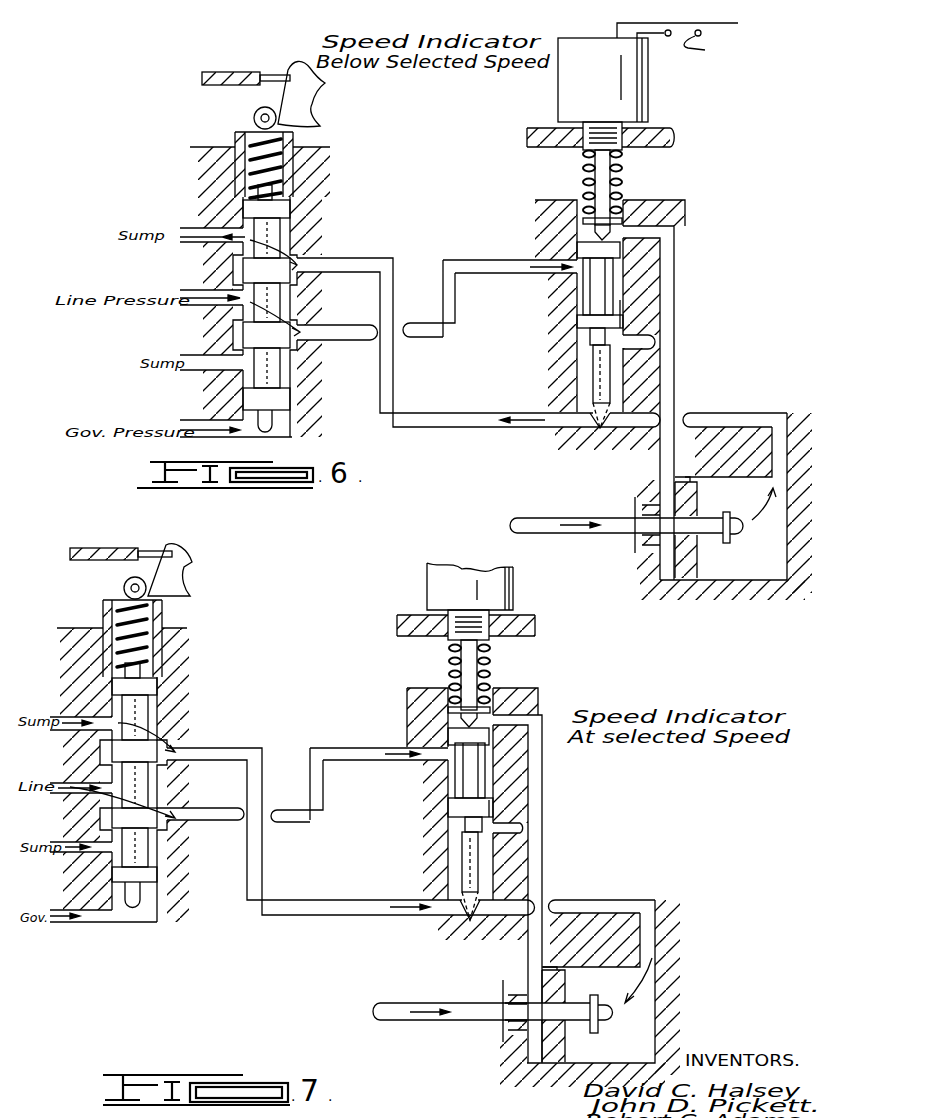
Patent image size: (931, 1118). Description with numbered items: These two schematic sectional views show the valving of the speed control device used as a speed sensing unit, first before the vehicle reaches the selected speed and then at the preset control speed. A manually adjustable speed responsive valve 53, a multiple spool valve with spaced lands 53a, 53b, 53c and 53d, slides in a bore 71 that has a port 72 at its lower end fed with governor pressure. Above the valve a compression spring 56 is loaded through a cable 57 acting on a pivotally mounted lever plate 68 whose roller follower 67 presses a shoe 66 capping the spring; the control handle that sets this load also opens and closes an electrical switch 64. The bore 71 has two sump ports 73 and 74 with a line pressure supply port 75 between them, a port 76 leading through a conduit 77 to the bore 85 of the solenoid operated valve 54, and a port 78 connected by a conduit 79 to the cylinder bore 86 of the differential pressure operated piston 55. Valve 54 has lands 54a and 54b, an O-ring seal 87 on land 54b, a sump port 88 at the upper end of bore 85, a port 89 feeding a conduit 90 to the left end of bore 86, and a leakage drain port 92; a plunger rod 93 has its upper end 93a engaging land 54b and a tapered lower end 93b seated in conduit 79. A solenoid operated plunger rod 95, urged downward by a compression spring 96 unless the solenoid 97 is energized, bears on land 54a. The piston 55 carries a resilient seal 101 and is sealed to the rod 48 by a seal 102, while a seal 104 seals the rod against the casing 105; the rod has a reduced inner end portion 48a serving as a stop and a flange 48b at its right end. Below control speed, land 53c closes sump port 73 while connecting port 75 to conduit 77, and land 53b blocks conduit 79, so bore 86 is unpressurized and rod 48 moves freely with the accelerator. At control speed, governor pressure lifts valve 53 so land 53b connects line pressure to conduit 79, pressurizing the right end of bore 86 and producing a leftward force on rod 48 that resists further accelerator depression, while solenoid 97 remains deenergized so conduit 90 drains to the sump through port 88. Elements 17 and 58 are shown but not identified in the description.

In FIG. 6, the mounting plate 17 is at (527, 136).
In FIG. 7, the mounting plate 17 is at (400, 622).
In FIG. 6, the piston connecting rod 48 is at (649, 517).
In FIG. 7, the piston connecting rod 48 is at (557, 998).
In FIG. 6, the reduced diameter inner end portion 48a is at (740, 530).
In FIG. 7, the reduced diameter inner end portion 48a is at (620, 1018).
In FIG. 6, the washer-like flange 48b is at (750, 497).
In FIG. 7, the washer-like flange 48b is at (660, 958).
In FIG. 6, the speed responsive valve 53 is at (261, 302).
In FIG. 7, the speed responsive valve 53 is at (150, 780).
In FIG. 6, the valve land 53a is at (255, 205).
In FIG. 7, the valve land 53a is at (160, 686).
In FIG. 6, the valve land 53b is at (243, 268).
In FIG. 7, the valve land 53b is at (165, 742).
In FIG. 6, the valve land 53c is at (243, 335).
In FIG. 7, the valve land 53c is at (117, 819).
In FIG. 6, the valve land 53d is at (245, 397).
In FIG. 7, the valve land 53d is at (150, 878).
In FIG. 6, the solenoid operated valve 54 is at (566, 283).
In FIG. 7, the solenoid operated valve 54 is at (425, 766).
In FIG. 6, the upper end land 54a is at (585, 258).
In FIG. 7, the upper end land 54a is at (458, 740).
In FIG. 6, the lower end land 54b is at (580, 318).
In FIG. 7, the lower end land 54b is at (454, 778).
In FIG. 6, the differential pressure operated piston 55 is at (708, 561).
In FIG. 7, the differential pressure operated piston 55 is at (576, 1043).
In FIG. 6, the compression spring 56 is at (296, 160).
In FIG. 7, the compression spring 56 is at (165, 623).
In FIG. 6, the cable 57 is at (290, 73).
In FIG. 7, the cable 57 is at (145, 578).
In FIG. 6, the link 58 is at (225, 72).
In FIG. 7, the link 58 is at (90, 548).
In FIG. 6, the electrical switch 64 is at (705, 50).
In FIG. 6, the shoe 66 is at (298, 130).
In FIG. 7, the shoe 66 is at (170, 606).
In FIG. 7, the roller follower 67 is at (124, 587).
In FIG. 6, the lever plate 68 is at (308, 98).
In FIG. 7, the lever plate 68 is at (195, 561).
In FIG. 6, the valve bore 71 is at (300, 275).
In FIG. 7, the valve bore 71 is at (160, 862).
In FIG. 6, the governor pressure port 72 is at (235, 440).
In FIG. 7, the governor pressure port 72 is at (108, 925).
In FIG. 6, the sump port 73 is at (225, 360).
In FIG. 7, the sump port 73 is at (85, 868).
In FIG. 6, the sump port 74 is at (198, 234).
In FIG. 7, the sump port 74 is at (70, 715).
In FIG. 6, the line pressure supply port 75 is at (243, 297).
In FIG. 7, the line pressure supply port 75 is at (72, 783).
In FIG. 6, the port 76 is at (305, 326).
In FIG. 7, the port 76 is at (338, 750).
In FIG. 6, the conduit 77 is at (465, 268).
In FIG. 7, the conduit 77 is at (359, 785).
In FIG. 6, the port 78 is at (298, 232).
In FIG. 6, the conduit 79 is at (393, 366).
In FIG. 7, the conduit 79 is at (315, 917).
In FIG. 6, the valve bore 85 is at (630, 285).
In FIG. 6, the cylinder bore 86 is at (732, 584).
In FIG. 7, the cylinder bore 86 is at (592, 968).
In FIG. 6, the O-ring seal 87 is at (622, 330).
In FIG. 7, the O-ring seal 87 is at (495, 815).
In FIG. 6, the sump port 88 is at (520, 195).
In FIG. 7, the sump port 88 is at (410, 668).
In FIG. 6, the port 89 is at (642, 225).
In FIG. 7, the port 89 is at (525, 700).
In FIG. 6, the conduit 90 is at (677, 332).
In FIG. 7, the conduit 90 is at (544, 838).
In FIG. 6, the drain port 92 is at (645, 355).
In FIG. 7, the drain port 92 is at (520, 826).
In FIG. 6, the plunger rod 93 is at (579, 395).
In FIG. 7, the plunger rod 93 is at (421, 885).
In FIG. 6, the upper end 93a is at (592, 338).
In FIG. 7, the upper end 93a is at (462, 825).
In FIG. 6, the lower end 93b is at (606, 426).
In FIG. 7, the lower end 93b is at (466, 920).
In FIG. 6, the solenoid operated plunger rod 95 is at (605, 175).
In FIG. 7, the solenoid operated plunger rod 95 is at (485, 660).
In FIG. 6, the compression spring 96 is at (587, 162).
In FIG. 7, the compression spring 96 is at (490, 680).
In FIG. 6, the solenoid 97 is at (635, 88).
In FIG. 7, the solenoid 97 is at (503, 592).
In FIG. 6, the O-ring seal 101 is at (690, 478).
In FIG. 7, the O-ring seal 101 is at (552, 965).
In FIG. 6, the O-ring seal 102 is at (668, 548).
In FIG. 7, the O-ring seal 102 is at (545, 1035).
In FIG. 7, the O-ring seal 104 is at (515, 995).
In FIG. 7, the casing 105 is at (407, 695).